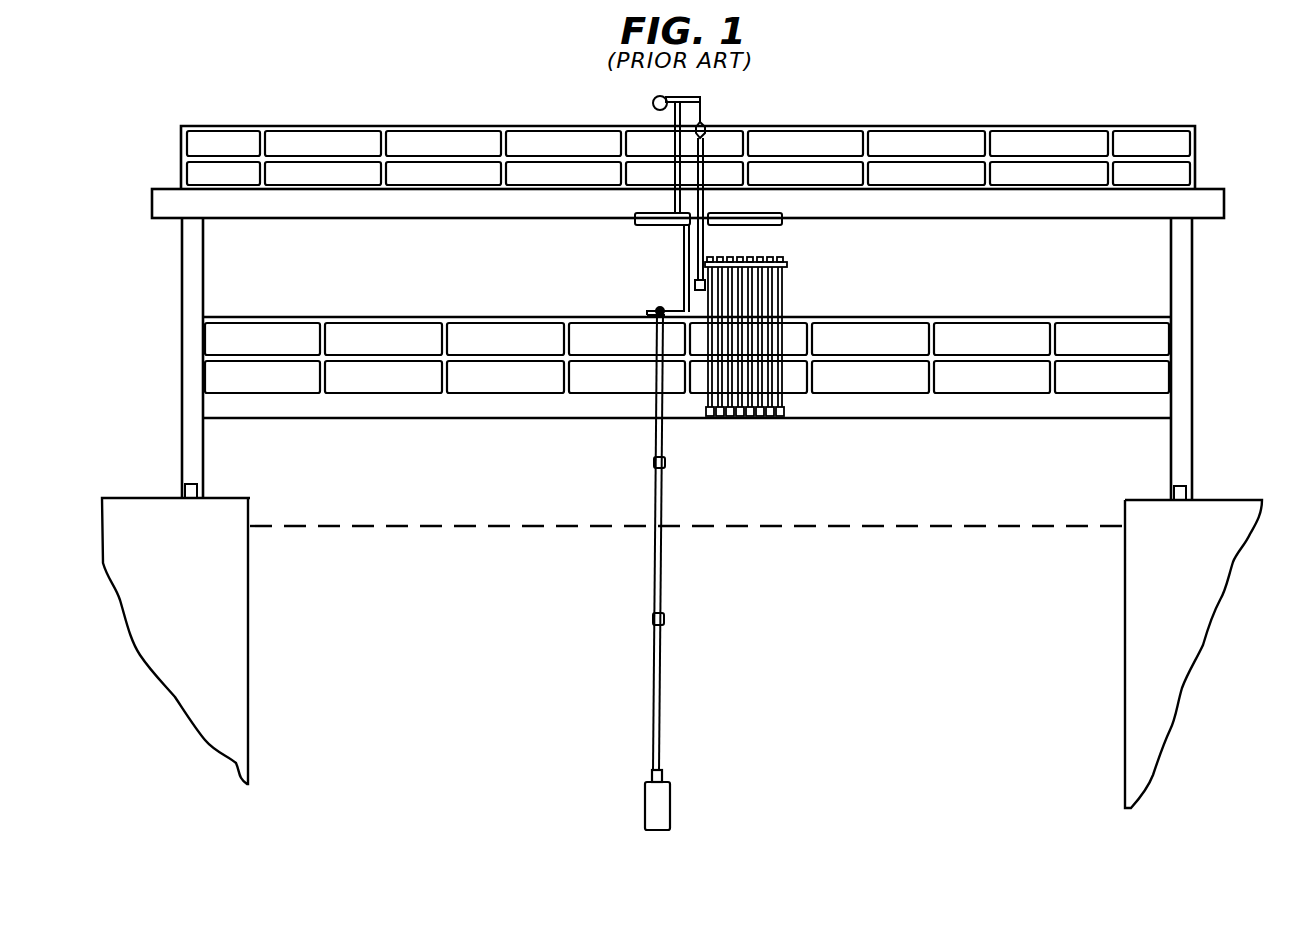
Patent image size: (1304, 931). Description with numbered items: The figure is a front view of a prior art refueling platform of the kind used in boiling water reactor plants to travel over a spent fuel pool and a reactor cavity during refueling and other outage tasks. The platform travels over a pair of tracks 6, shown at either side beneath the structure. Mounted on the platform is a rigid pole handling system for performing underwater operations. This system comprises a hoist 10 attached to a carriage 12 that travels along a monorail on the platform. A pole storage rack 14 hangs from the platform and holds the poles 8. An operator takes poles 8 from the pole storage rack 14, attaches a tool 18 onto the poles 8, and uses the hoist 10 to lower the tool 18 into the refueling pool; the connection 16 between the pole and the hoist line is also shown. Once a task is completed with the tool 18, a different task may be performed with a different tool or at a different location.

The tracks 6 is at (170, 484).
The poles 8 is at (640, 666).
The hoist 10 is at (710, 101).
The carriage 12 is at (632, 228).
The pole storage rack 14 is at (800, 270).
The swivel connector 16 is at (642, 312).
The tool 18 is at (673, 792).